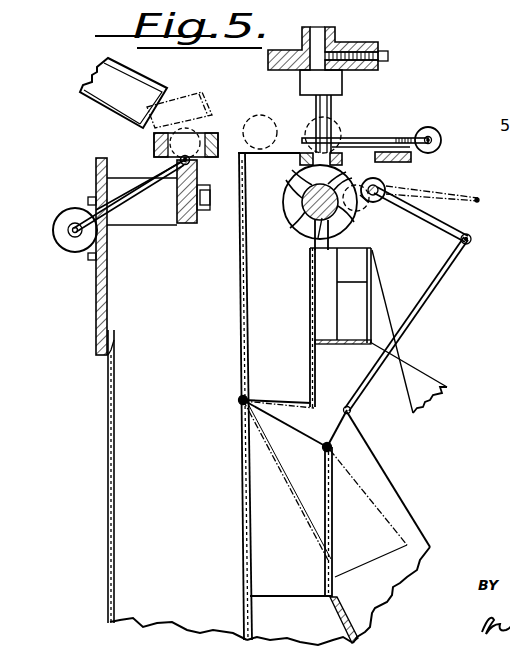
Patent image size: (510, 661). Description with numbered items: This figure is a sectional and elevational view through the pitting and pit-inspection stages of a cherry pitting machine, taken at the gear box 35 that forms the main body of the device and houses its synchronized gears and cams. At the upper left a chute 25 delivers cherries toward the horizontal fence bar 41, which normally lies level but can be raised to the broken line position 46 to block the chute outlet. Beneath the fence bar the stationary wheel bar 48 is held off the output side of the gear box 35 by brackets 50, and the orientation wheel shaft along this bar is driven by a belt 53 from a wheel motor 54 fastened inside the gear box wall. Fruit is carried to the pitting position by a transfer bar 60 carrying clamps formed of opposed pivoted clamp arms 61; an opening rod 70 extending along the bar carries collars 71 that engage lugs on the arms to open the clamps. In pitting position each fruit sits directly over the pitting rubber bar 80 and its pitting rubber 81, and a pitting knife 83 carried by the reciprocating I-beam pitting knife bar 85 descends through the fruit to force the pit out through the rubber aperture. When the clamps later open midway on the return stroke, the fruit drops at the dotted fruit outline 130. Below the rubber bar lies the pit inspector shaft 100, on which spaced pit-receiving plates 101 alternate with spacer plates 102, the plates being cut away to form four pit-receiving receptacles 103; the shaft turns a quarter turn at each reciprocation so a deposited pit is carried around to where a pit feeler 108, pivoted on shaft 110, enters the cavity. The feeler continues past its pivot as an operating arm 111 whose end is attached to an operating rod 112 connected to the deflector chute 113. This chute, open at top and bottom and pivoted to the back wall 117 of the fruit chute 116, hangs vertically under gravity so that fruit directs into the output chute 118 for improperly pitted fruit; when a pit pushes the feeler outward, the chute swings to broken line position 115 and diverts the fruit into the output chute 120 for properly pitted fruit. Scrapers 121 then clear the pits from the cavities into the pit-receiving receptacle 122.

The chute 25 is at (100, 87).
The broken line position 46 is at (200, 97).
The fence bar 41 is at (153, 142).
The belt 53 is at (117, 192).
The wheel motor 54 is at (62, 241).
The bracket 50 is at (130, 218).
The wheel bar 48 is at (183, 225).
The gear box 35 is at (96, 311).
The pitting knife bar 85 is at (336, 32).
The pitting knife 83 is at (331, 107).
The dotted fruit outline 130 is at (270, 110).
The pitting rubber 81 is at (335, 151).
The pitting rubber bar 80 is at (342, 159).
The clamp arm 61 is at (368, 138).
The transfer bar 60 is at (412, 157).
The opening rod 70 is at (428, 136).
The collar 71 is at (441, 133).
The back wall 117 is at (241, 338).
The fruit chute 116 is at (290, 320).
The pit inspector shaft 100 is at (302, 222).
The pit-receiving receptacle 103 is at (318, 174).
The pit-receiving plate 101 is at (298, 183).
The spacer plate 102 is at (288, 199).
The scraper 121 is at (318, 240).
The shaft 110 is at (385, 186).
The pit feeler 108 is at (364, 205).
The operating arm 111 is at (418, 212).
The operating rod 112 is at (447, 282).
The pit-receiving receptacle 122 is at (358, 268).
The deflector chute 113 is at (331, 461).
The output chute 118 is at (296, 626).
The broken line position 115 is at (378, 483).
The output chute 120 is at (380, 596).